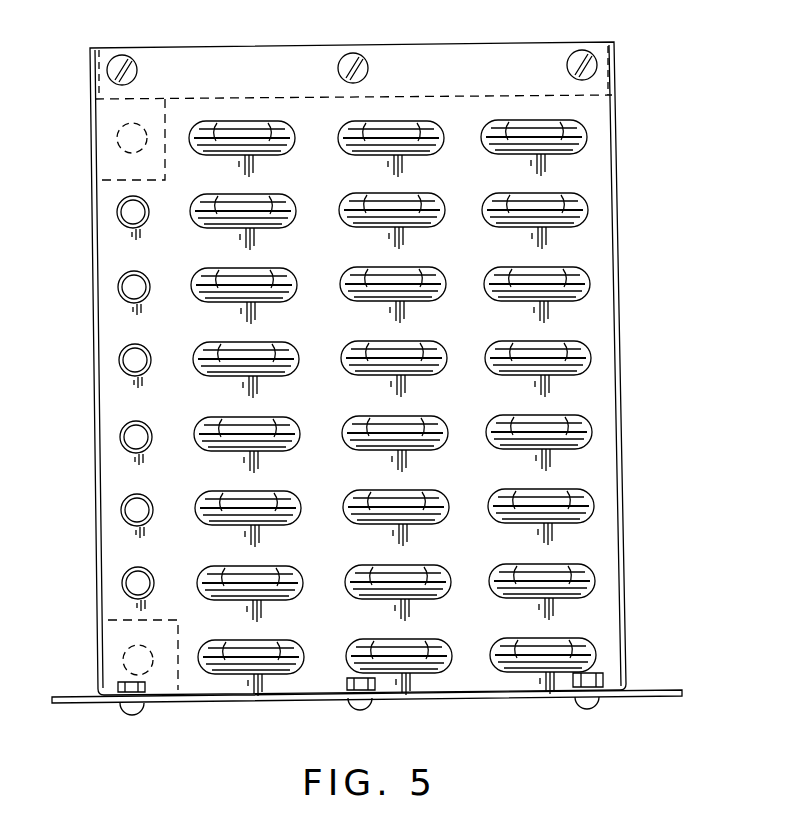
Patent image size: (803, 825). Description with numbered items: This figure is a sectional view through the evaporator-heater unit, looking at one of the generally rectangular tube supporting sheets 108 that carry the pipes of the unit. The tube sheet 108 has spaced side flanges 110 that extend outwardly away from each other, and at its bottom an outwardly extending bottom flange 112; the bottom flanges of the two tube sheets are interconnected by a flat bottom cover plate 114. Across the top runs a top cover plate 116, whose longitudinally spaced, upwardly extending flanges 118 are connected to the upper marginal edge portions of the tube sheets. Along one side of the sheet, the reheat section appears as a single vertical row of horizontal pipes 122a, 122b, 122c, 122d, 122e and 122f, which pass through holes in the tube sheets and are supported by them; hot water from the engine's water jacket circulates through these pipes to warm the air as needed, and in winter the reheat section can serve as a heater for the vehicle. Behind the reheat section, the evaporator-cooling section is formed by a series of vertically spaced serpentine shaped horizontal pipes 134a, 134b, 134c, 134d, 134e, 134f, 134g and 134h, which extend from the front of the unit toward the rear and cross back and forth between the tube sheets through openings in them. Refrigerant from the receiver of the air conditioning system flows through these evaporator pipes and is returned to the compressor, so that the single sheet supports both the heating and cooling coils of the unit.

The tube supporting sheet 108 is at (125, 552).
The side flange 110 is at (620, 245).
The bottom flange 112 is at (205, 688).
The bottom cover plate 114 is at (632, 697).
The top cover plate 116 is at (193, 97).
The upwardly extending flange 118 is at (103, 66).
The horizontal pipe 122a is at (116, 213).
The horizontal pipe 122b is at (117, 289).
The horizontal pipe 122c is at (119, 362).
The horizontal pipe 122d is at (120, 438).
The horizontal pipe 122e is at (121, 514).
The horizontal pipe 122f is at (124, 590).
The serpentine shaped horizontal pipe 134a is at (586, 136).
The serpentine shaped horizontal pipe 134b is at (587, 208).
The serpentine shaped horizontal pipe 134c is at (589, 283).
The serpentine shaped horizontal pipe 134d is at (590, 357).
The serpentine shaped horizontal pipe 134e is at (591, 431).
The serpentine shaped horizontal pipe 134f is at (593, 504).
The serpentine shaped horizontal pipe 134g is at (594, 579).
The serpentine shaped horizontal pipe 134h is at (596, 653).